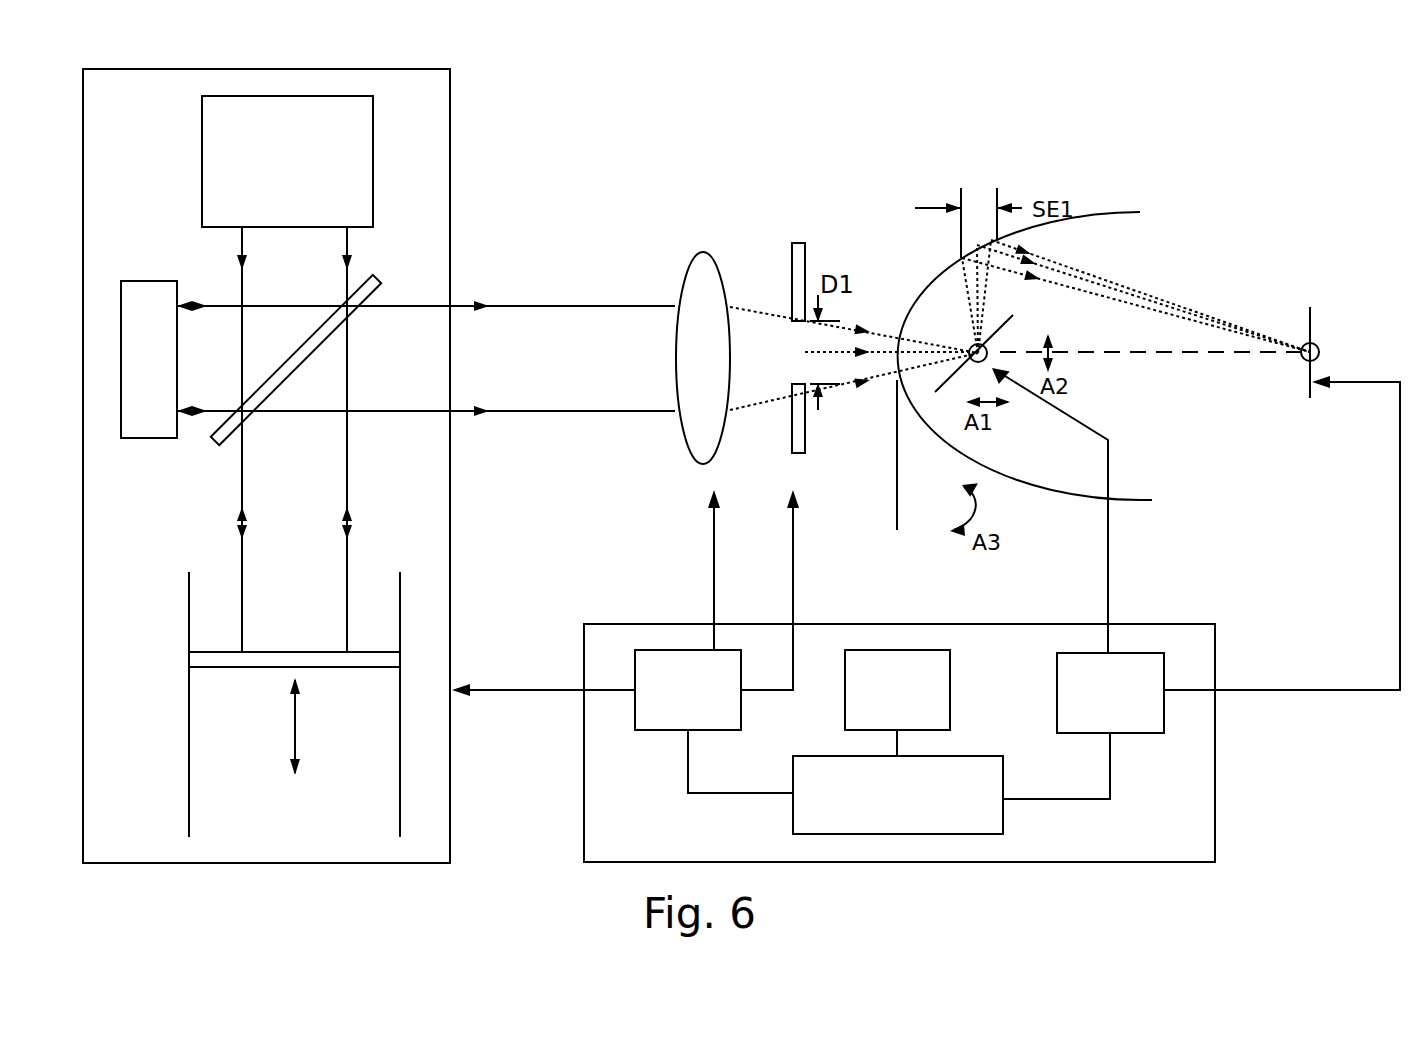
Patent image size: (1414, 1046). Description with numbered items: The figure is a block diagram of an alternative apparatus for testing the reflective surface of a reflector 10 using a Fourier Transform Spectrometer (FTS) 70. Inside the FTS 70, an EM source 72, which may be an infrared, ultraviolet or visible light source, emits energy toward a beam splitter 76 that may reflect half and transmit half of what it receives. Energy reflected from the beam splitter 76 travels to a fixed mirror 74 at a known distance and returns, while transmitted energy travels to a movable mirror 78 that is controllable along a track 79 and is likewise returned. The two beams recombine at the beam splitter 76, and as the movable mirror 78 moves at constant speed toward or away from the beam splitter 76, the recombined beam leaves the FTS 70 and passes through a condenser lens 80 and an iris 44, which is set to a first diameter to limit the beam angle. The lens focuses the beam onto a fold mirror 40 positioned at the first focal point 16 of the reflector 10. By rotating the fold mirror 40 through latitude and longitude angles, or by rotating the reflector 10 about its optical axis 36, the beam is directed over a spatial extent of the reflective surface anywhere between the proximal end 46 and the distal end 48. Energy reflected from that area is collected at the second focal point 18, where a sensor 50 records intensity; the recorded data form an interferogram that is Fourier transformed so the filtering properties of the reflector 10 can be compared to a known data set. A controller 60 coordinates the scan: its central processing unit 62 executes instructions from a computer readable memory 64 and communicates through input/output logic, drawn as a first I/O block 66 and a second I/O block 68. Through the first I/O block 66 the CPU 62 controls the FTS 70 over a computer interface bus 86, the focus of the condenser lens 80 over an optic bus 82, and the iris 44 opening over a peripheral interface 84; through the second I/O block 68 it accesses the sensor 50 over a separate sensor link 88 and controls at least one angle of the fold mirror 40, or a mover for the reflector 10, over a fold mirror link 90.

The reflector 10 is at (1208, 226).
The first focal point F1 16 is at (975, 364).
The second focal point F2 18 is at (1305, 362).
The optical axis 36 is at (1196, 356).
The fold mirror 40 is at (1005, 324).
The iris 44 is at (805, 243).
The proximal end 46 is at (896, 474).
The distal end 48 is at (1142, 513).
The sensor 50 is at (1311, 312).
The controller 60 is at (899, 743).
The central processing unit 62 is at (898, 795).
The computer readable memory 64 is at (897, 690).
The I/O interface 66 is at (688, 690).
The I/O interface 68 is at (1110, 693).
The Fourier Transform Spectrometer 70 is at (266, 466).
The EM source 72 is at (287, 161).
The fixed mirror 74 is at (165, 440).
The beam splitter 76 is at (378, 281).
The movable mirror 78 is at (275, 668).
The track 79 is at (400, 730).
The condenser lens 80 is at (705, 252).
The optic bus 82 is at (714, 535).
The peripheral interface 84 is at (793, 535).
The computer interface bus 86 is at (505, 690).
The sensor link 88 is at (1272, 690).
The fold mirror link 90 is at (1108, 530).